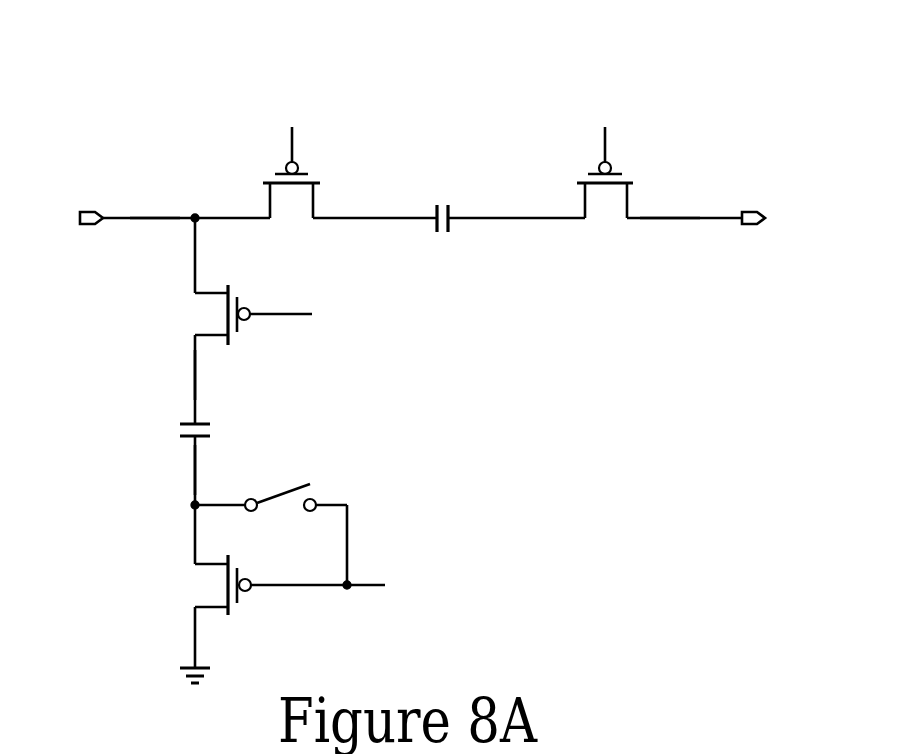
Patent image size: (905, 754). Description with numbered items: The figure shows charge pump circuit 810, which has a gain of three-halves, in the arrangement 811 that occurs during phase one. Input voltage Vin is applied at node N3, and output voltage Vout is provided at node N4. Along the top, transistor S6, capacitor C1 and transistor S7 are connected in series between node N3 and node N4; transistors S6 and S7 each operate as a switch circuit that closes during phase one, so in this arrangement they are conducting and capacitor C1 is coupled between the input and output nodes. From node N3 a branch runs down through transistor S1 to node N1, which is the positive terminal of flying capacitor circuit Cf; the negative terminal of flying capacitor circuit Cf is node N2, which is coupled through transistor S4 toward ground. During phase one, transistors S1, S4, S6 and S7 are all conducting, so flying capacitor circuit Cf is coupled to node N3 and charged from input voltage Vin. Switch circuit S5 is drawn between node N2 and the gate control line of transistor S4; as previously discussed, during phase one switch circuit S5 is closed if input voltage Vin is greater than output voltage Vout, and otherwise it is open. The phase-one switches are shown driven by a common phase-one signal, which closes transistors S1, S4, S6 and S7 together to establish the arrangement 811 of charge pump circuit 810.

The charge pump circuit 810 is at (584, 38).
The arrangement 811 is at (437, 95).
The node N1 is at (195, 374).
The node N2 is at (195, 464).
The node N3 is at (142, 218).
The node N4 is at (678, 210).
The transistor S1 is at (287, 315).
The transistor S4 is at (320, 585).
The switch circuit S5 is at (271, 515).
The transistor S6 is at (288, 158).
The transistor S7 is at (607, 158).
The capacitor C1 is at (442, 229).
The flying capacitor circuit Cf is at (213, 438).
The input voltage Vin is at (67, 217).
The output voltage Vout is at (785, 217).